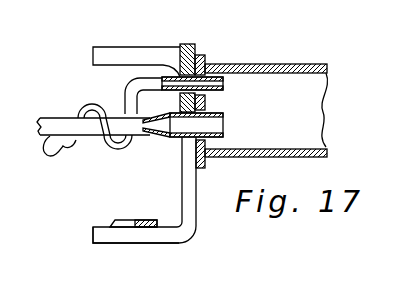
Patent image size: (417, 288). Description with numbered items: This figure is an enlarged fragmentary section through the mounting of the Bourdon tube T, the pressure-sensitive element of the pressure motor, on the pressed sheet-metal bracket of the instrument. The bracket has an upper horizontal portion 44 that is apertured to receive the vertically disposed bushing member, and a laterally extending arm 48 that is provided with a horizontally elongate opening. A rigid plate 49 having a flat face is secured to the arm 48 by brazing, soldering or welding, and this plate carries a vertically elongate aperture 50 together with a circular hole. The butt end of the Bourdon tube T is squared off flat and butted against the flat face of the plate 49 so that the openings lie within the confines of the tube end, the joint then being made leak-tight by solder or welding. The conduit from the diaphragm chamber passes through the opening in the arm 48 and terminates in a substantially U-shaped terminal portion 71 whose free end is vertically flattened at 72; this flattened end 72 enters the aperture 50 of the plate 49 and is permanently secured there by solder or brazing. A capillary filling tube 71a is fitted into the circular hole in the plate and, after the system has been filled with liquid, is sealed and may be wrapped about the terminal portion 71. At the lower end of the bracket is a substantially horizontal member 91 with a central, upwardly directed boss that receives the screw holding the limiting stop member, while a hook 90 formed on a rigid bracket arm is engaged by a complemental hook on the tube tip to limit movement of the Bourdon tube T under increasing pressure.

The upper horizontal portion 44 is at (150, 32).
The vertically elongate aperture 50 is at (186, 44).
The rigid plate 49 is at (200, 58).
The Bourdon tube T is at (312, 81).
The flattened end 72 is at (210, 114).
The capillary filling tube 71a is at (127, 83).
The U-shaped terminal portion 71 is at (50, 118).
The laterally extending arm 48 is at (187, 188).
The horizontal member 91 is at (143, 238).
The hook 90 is at (128, 221).